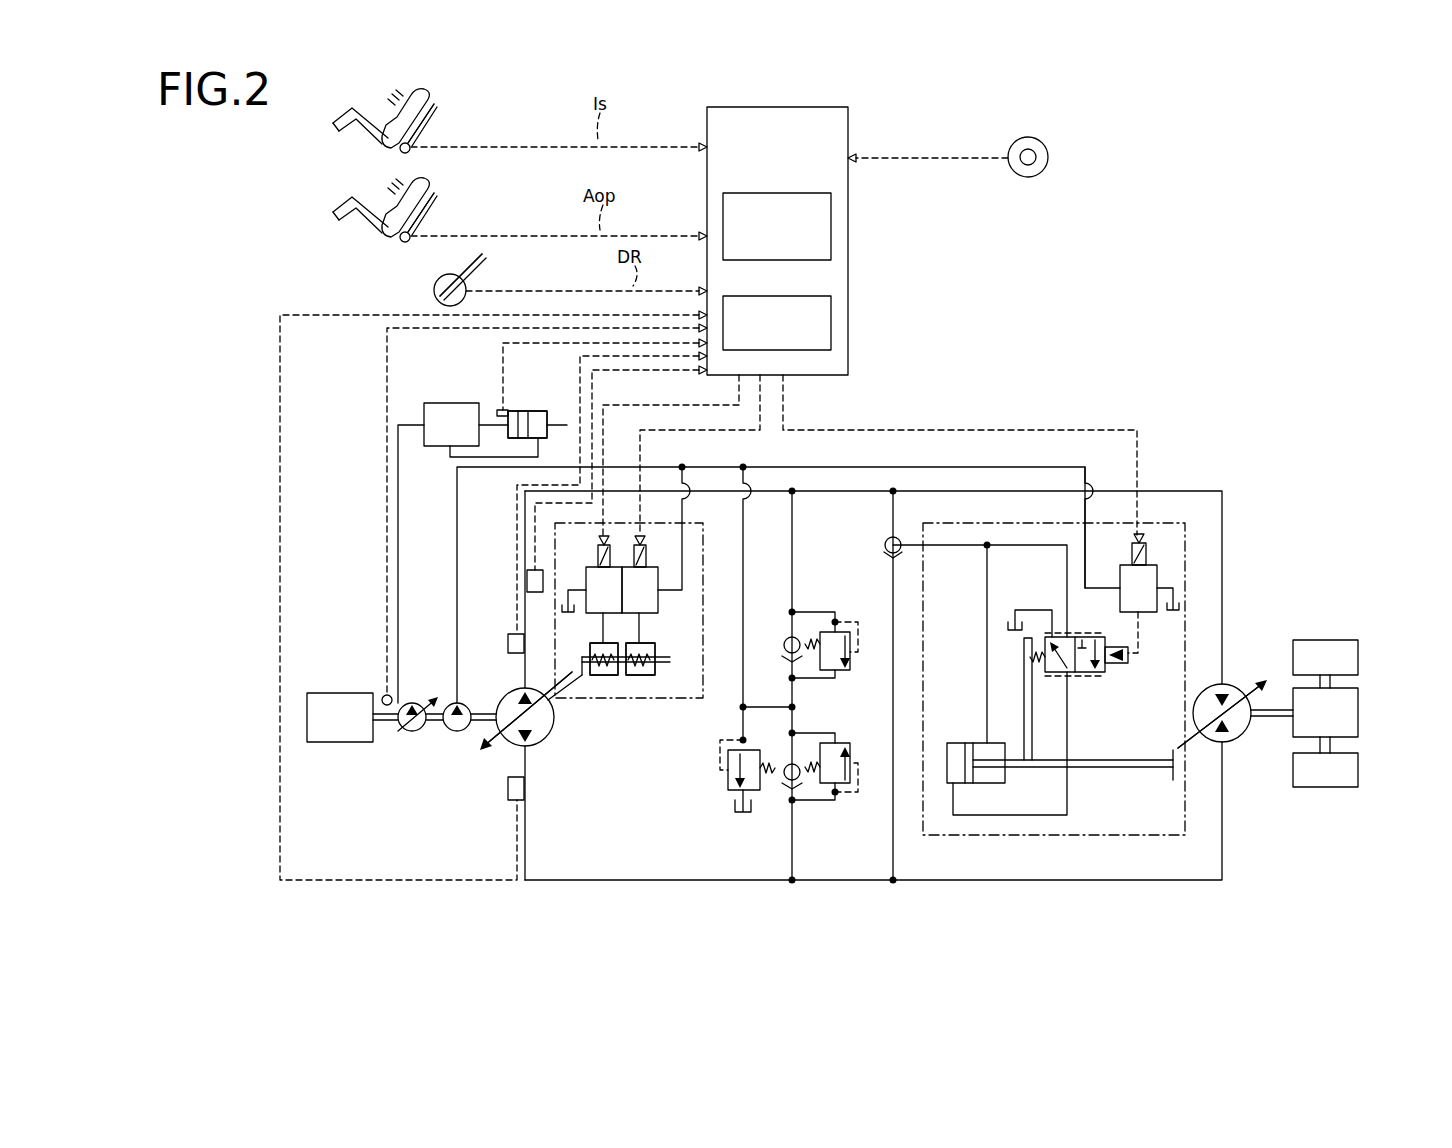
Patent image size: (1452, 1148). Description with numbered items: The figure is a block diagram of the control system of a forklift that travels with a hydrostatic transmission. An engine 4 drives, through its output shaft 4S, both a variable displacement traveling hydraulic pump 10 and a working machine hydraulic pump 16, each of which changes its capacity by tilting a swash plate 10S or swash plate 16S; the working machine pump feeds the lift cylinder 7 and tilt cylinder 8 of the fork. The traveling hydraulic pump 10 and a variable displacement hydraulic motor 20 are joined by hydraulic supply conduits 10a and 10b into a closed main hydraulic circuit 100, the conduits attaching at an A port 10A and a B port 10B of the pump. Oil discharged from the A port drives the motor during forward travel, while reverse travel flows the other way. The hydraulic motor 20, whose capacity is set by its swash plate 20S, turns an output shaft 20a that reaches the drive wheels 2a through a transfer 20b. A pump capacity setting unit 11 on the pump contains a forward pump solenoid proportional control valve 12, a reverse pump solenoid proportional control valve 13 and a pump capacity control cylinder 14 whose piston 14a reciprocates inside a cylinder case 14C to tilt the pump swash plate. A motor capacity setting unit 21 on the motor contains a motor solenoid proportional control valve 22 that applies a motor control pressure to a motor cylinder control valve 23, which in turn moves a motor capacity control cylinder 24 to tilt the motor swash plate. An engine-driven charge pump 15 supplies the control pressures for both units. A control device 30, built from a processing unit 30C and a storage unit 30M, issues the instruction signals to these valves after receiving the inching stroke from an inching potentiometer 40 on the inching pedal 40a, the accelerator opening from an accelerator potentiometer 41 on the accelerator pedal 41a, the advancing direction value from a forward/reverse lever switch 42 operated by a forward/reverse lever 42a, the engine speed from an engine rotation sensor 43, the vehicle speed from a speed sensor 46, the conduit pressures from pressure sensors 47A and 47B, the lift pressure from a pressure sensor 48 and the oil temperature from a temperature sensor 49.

The drive wheels 2a is at (1363, 655).
The engine 4 is at (325, 742).
The output shaft 4S is at (381, 722).
The lift cylinder 7 is at (516, 411).
The tilt cylinder 8 is at (527, 424).
The traveling hydraulic pump 10 is at (548, 735).
The A port 10A is at (519, 686).
The B port 10B is at (537, 750).
The swash plate 10S is at (500, 740).
The hydraulic supply conduit 10a is at (815, 493).
The hydraulic supply conduit 10b is at (598, 880).
The pump capacity setting unit 11 is at (683, 700).
The forward pump solenoid proportional control valve 12 is at (652, 613).
The reverse pump solenoid proportional control valve 13 is at (594, 613).
The pump capacity control cylinder 14 is at (688, 796).
The piston 14a is at (621, 676).
The cylinder case 14C is at (639, 676).
The charge pump 15 is at (457, 731).
The working machine hydraulic pump 16 is at (408, 731).
The swash plate 16S is at (397, 730).
The hydraulic motor 20 is at (1226, 742).
The swash plate 20S is at (1248, 687).
The output shaft 20a is at (1282, 718).
The transfer 20b is at (1363, 708).
The motor capacity setting unit 21 is at (1031, 836).
The motor solenoid proportional control valve 22 is at (1146, 613).
The motor cylinder control valve 23 is at (1095, 688).
The motor capacity control cylinder 24 is at (953, 743).
The control device 30 is at (798, 107).
The processing unit 30C is at (781, 193).
The storage unit 30M is at (781, 296).
The inching potentiometer 40 is at (417, 140).
The inching pedal 40a is at (432, 105).
The accelerator potentiometer 41 is at (417, 229).
The accelerator pedal 41a is at (432, 194).
The forward/reverse lever switch 42 is at (435, 293).
The forward/reverse lever 42a is at (484, 258).
The engine rotation sensor 43 is at (384, 696).
The speed sensor 46 is at (1024, 137).
The pressure sensor 47A is at (510, 634).
The pressure sensor 47B is at (530, 800).
The pressure sensor 48 is at (500, 410).
The temperature sensor 49 is at (528, 575).
The main hydraulic circuit 100 is at (1127, 895).